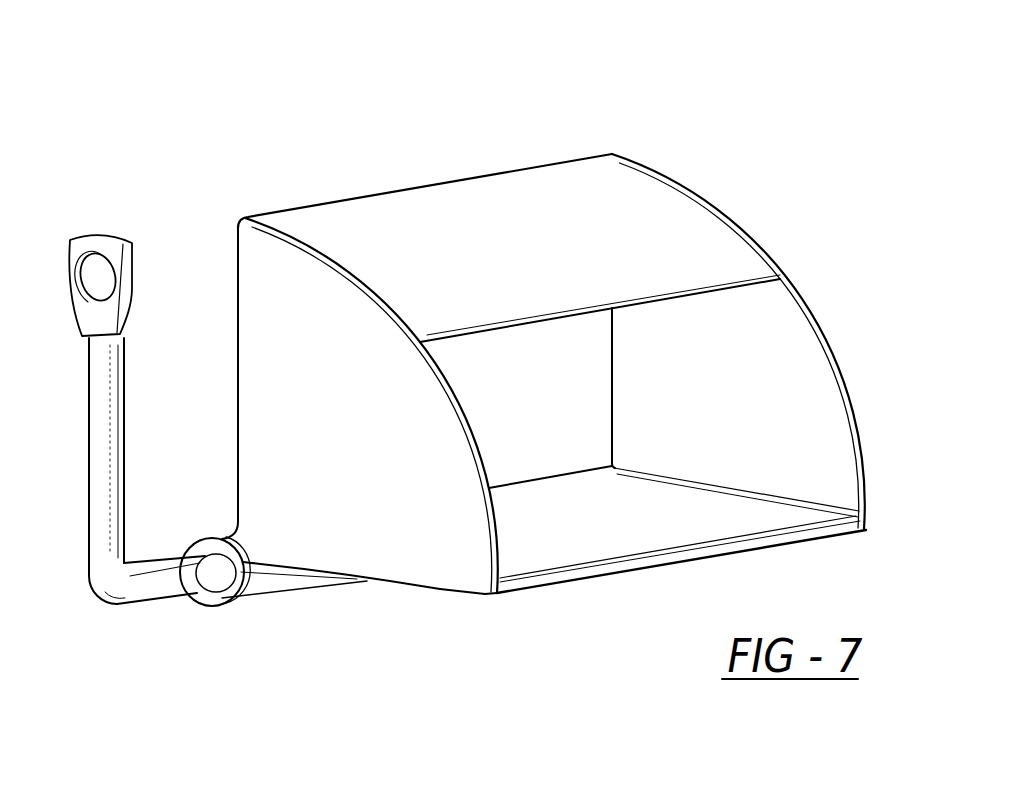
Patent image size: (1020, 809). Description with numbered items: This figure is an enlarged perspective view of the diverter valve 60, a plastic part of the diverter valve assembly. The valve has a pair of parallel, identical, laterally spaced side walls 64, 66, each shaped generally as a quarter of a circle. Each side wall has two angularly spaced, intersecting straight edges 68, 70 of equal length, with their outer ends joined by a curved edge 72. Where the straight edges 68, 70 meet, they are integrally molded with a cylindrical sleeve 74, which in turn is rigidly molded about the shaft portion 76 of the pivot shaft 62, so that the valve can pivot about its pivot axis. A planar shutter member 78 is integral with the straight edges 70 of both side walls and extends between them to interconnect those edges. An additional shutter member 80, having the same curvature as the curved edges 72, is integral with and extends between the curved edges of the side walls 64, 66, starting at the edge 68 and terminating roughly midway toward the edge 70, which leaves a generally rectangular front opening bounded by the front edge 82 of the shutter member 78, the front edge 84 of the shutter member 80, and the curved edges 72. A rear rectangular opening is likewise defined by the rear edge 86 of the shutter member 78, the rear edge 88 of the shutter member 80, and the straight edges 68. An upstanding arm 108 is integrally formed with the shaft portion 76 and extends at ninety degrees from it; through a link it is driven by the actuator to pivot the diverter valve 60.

The diverter valve 60 is at (668, 132).
The pivot shaft 62 is at (76, 550).
The side wall 64 is at (403, 537).
The side wall 66 is at (766, 325).
The straight edge 68 is at (233, 300).
The straight edge 70 is at (466, 600).
The curved edge 72 is at (383, 306).
The cylindrical sleeve 74 is at (260, 580).
The shaft portion 76 is at (163, 587).
The planar shutter member 78 is at (551, 541).
The shutter member 80 is at (527, 232).
The front edge 82 is at (665, 570).
The front edge 84 is at (485, 334).
The rear edge 86 is at (503, 476).
The rear edge 88 is at (343, 200).
The upstanding arm 108 is at (109, 388).